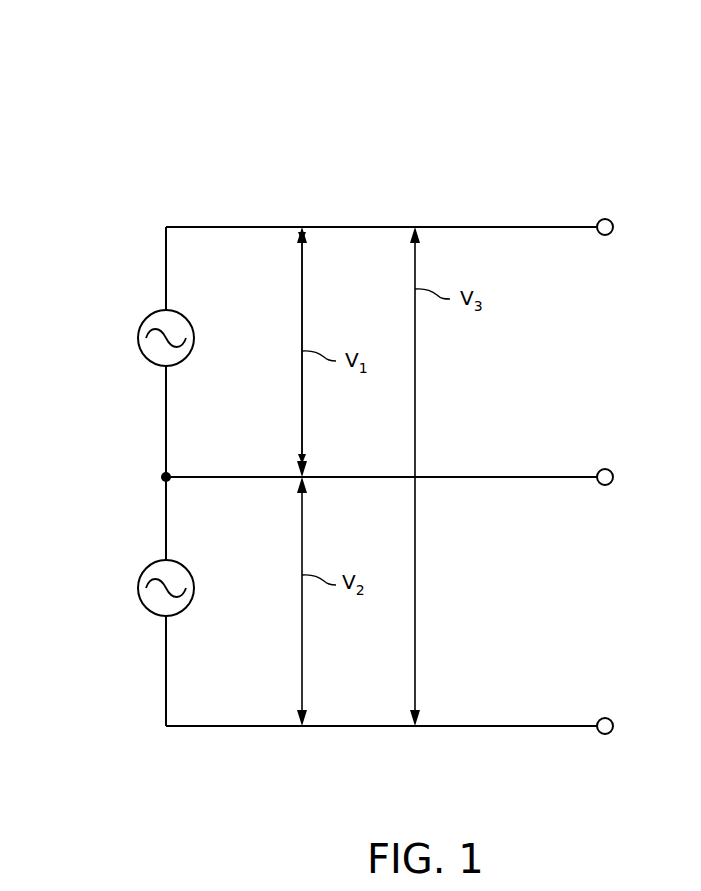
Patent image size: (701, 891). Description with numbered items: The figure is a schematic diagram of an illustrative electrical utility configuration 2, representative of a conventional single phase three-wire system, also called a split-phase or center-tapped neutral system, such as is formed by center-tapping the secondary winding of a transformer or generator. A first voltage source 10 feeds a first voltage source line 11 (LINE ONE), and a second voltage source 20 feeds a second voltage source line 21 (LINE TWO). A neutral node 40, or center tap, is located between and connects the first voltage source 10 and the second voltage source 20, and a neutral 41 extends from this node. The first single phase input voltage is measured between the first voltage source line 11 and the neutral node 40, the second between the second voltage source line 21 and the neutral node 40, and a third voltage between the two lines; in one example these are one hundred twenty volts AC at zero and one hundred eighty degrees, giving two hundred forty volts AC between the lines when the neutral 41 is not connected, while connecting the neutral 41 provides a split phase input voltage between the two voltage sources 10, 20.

The electrical utility configuration 2 is at (122, 76).
The first voltage source 10 is at (136, 339).
The second voltage source 20 is at (136, 589).
The neutral node 40 is at (160, 477).
The first voltage source line 11 is at (521, 227).
The neutral 41 is at (570, 477).
The second voltage source line 21 is at (521, 726).